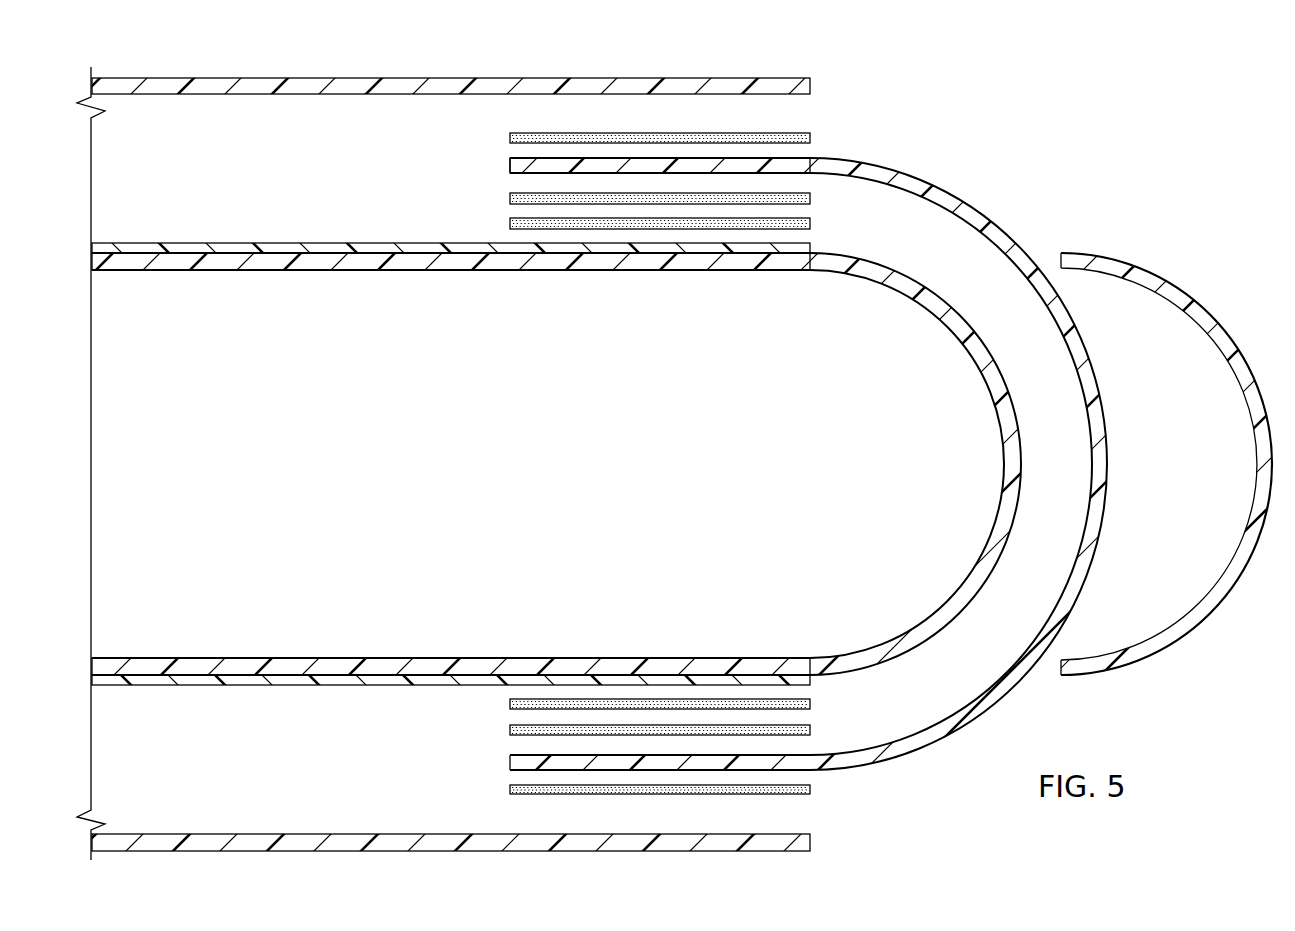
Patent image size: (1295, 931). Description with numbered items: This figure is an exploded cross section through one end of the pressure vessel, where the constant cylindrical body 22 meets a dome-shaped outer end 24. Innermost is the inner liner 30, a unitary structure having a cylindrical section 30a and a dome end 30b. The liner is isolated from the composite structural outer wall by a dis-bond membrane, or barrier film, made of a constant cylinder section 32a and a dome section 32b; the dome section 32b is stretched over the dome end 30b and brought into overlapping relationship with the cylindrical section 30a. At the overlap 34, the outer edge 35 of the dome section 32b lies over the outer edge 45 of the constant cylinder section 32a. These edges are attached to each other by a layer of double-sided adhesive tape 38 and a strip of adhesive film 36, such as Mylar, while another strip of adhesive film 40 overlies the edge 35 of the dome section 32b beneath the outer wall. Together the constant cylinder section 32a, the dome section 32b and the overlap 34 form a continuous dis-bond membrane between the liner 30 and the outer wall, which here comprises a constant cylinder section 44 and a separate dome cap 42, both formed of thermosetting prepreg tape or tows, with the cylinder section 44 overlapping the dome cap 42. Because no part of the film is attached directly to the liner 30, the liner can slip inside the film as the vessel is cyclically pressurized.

The cylindrical body 22 is at (107, 69).
The dome-shaped outer end 24 is at (1082, 200).
The inner liner 30 is at (998, 470).
The cylindrical section of the inner liner 30a is at (240, 271).
The dome end of the inner liner 30b is at (883, 643).
The constant cylinder section of the dis-bond membrane 32a is at (310, 250).
The dome section of the dis-bond membrane 32b is at (968, 203).
The overlap 34 is at (830, 101).
The outer edge of the dome section 35 is at (638, 163).
The adhesive film strip 36 is at (812, 224).
The double-sided adhesive tape 38 is at (510, 199).
The adhesive film strip 40 is at (510, 138).
The dome cap 42 is at (1220, 318).
The constant cylinder section of the structural outer wall 44 is at (292, 95).
The outer edge of the constant cylinder section 45 is at (588, 258).